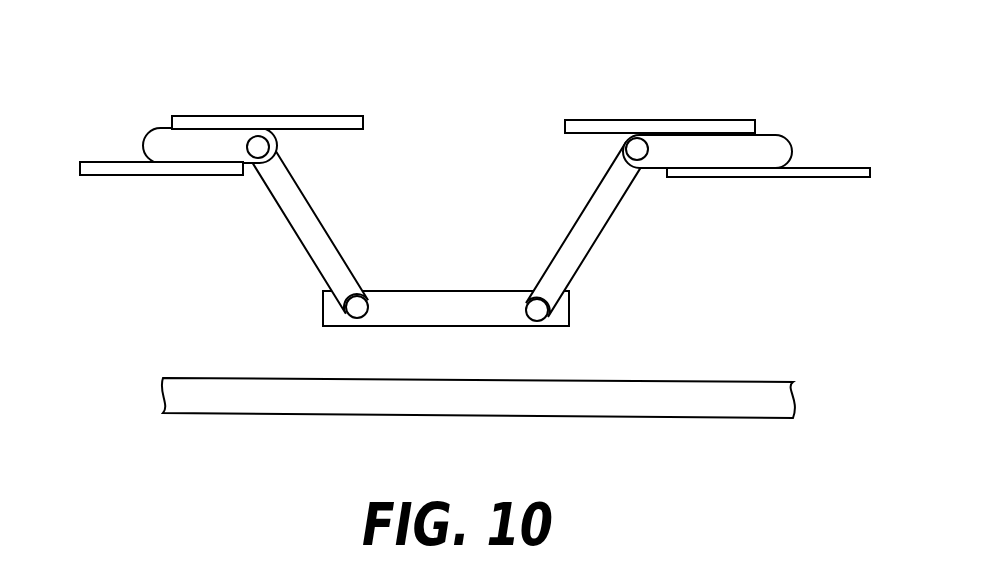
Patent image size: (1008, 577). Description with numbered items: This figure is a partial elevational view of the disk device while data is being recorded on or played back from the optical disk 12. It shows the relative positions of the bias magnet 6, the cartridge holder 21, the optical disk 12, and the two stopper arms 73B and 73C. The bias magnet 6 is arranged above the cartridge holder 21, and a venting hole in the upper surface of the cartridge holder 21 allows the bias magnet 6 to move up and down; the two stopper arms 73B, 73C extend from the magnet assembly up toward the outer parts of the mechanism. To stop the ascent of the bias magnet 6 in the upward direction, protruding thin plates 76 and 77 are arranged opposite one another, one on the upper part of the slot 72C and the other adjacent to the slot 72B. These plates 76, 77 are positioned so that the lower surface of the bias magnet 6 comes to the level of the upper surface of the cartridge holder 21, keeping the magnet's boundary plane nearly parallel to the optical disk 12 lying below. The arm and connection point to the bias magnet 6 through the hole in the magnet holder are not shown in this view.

The bias magnet 6 is at (428, 297).
The optical disk 12 is at (730, 390).
The cartridge holder 21 is at (120, 170).
The slot 72B is at (795, 147).
The slot 72C is at (150, 135).
The stopper arm 73B is at (596, 228).
The stopper arm 73C is at (289, 208).
The protruding thin plate 76 is at (598, 124).
The protruding thin plate 77 is at (287, 125).